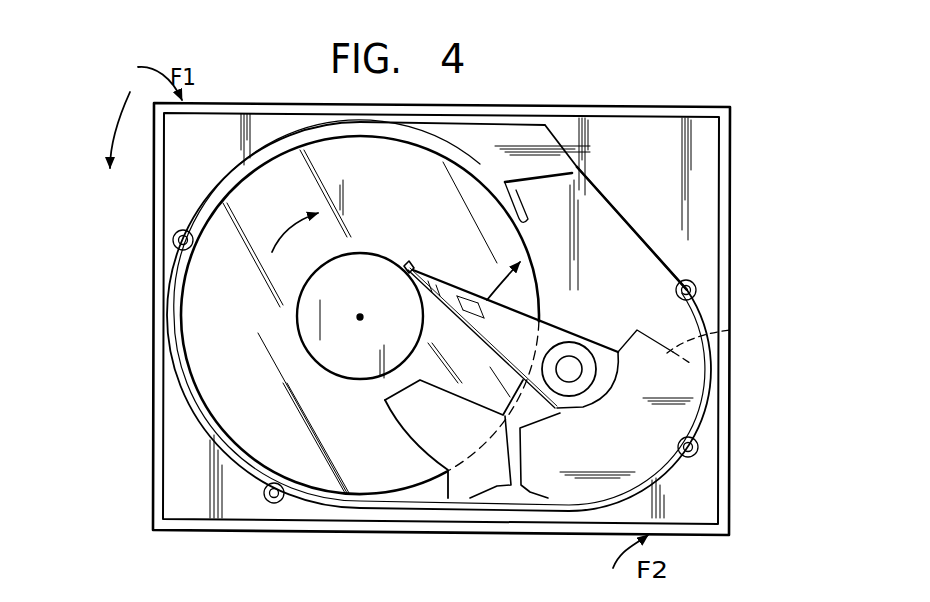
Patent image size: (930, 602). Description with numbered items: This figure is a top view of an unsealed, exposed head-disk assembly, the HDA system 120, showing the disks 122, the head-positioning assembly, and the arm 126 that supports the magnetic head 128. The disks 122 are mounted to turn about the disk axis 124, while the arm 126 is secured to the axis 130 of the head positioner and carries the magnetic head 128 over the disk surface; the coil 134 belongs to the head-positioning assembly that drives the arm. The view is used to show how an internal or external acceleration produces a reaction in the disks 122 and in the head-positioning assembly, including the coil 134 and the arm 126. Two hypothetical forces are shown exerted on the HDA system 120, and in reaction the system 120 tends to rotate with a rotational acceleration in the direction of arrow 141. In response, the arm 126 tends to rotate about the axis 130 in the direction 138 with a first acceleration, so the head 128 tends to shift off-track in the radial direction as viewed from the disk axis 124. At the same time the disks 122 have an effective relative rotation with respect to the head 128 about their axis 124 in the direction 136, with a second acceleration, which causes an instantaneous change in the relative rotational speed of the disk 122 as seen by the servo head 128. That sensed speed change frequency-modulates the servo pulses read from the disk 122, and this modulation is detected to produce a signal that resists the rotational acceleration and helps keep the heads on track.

The HDA system 120 is at (623, 90).
The disks 122 is at (212, 350).
The disk axis 124 is at (380, 294).
The arm 126 is at (557, 338).
The magnetic head 128 is at (408, 260).
The axis of the head positioner 130 is at (573, 366).
The coil 134 is at (710, 334).
The direction of disk rotation 136 is at (288, 232).
The direction of arm rotation 138 is at (496, 284).
The arrow of system rotation 141 is at (112, 112).